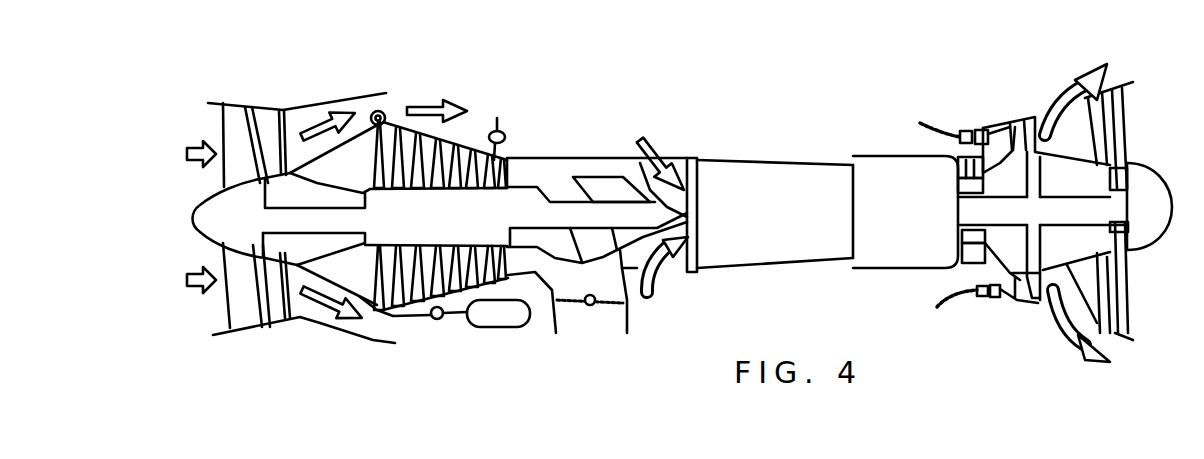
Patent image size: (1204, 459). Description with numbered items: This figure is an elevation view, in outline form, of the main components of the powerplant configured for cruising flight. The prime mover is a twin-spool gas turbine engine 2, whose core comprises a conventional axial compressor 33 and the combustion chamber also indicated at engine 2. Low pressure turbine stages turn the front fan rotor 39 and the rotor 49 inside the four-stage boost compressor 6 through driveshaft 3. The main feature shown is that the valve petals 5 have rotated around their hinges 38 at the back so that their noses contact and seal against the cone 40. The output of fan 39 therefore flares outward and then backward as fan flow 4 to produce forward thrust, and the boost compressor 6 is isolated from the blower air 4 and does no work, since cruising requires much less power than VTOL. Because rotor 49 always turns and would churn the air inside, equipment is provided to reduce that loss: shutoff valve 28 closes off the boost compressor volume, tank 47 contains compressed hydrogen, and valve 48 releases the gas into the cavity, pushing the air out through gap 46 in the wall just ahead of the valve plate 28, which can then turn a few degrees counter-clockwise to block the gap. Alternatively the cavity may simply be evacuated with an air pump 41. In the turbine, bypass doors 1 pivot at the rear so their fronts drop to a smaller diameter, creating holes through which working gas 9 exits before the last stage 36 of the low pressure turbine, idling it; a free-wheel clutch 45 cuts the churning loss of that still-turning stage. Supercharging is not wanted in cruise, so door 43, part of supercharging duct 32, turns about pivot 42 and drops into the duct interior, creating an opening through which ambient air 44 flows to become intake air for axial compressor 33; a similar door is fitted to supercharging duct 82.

The bypass doors 1 is at (1081, 147).
The gas turbine engine 2 is at (855, 155).
The driveshaft 3 is at (587, 220).
The fan flow 4 is at (450, 100).
The valve petals 5 is at (334, 160).
The boost compressor 6 is at (389, 125).
The working gas 9 is at (1088, 68).
The shutoff valve 28 is at (607, 307).
The supercharging duct 32 is at (583, 158).
The axial compressor 33 is at (738, 160).
The last stage of low pressure turbine 36 is at (1118, 130).
The hinges 38 is at (382, 110).
The fan rotor 39 is at (230, 105).
The cone 40 is at (317, 178).
The air pump 41 is at (506, 131).
The pivot 42 is at (637, 160).
The door 43 is at (660, 153).
The ambient air 44 is at (657, 156).
The free-wheel clutch 45 is at (1133, 231).
The gap 46 is at (631, 302).
The tank 47 is at (498, 313).
The valve 48 is at (438, 320).
The rotor 49 is at (464, 203).
The supercharging duct 82 is at (682, 268).